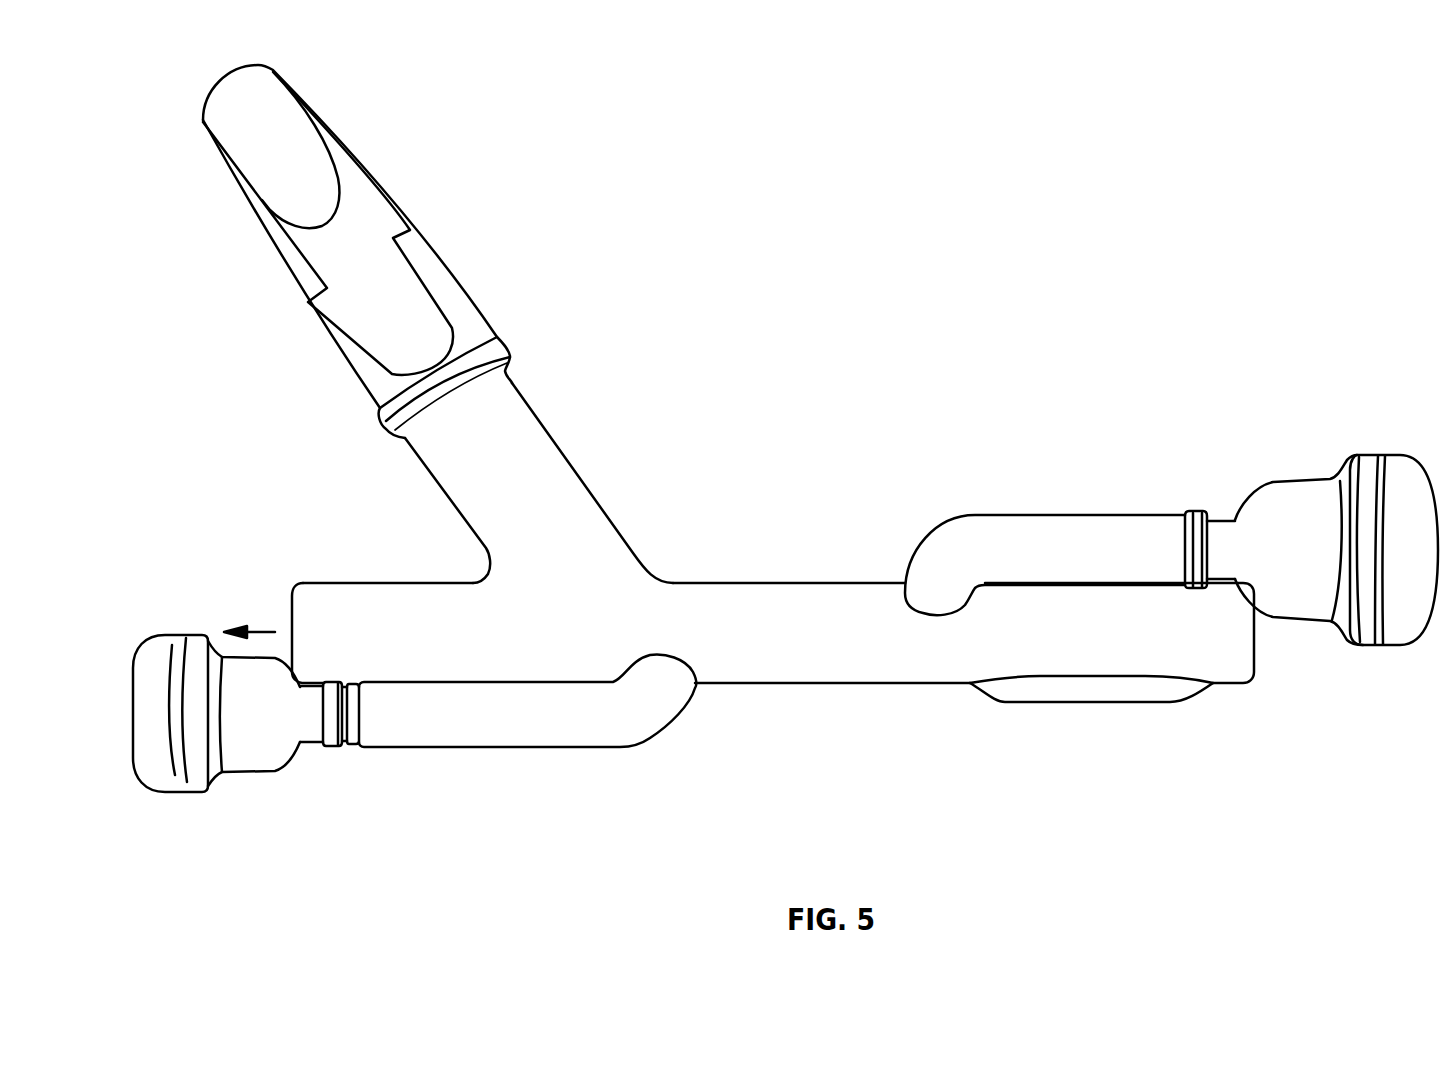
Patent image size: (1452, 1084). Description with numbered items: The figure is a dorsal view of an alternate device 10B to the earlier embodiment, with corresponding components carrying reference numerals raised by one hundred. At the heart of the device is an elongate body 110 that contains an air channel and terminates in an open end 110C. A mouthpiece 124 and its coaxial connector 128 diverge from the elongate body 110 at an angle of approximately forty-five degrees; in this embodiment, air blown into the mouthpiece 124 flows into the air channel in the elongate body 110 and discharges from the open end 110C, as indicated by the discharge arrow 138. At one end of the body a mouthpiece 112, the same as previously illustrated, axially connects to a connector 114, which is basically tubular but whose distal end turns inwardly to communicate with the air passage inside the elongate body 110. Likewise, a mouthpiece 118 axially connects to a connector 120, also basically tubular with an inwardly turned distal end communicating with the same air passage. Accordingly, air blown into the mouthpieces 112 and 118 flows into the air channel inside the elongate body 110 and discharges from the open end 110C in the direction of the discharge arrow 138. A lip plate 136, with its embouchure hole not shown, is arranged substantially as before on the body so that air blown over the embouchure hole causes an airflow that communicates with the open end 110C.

The mouthpiece assembly 10B is at (785, 455).
The elongate body 110 is at (738, 583).
The open end 110C is at (292, 602).
The mouthpiece 112 is at (255, 775).
The connector 114 is at (495, 748).
The mouthpiece 118 is at (1292, 478).
The connector 120 is at (1051, 513).
The mouthpiece 124 is at (373, 177).
The coaxial connector 128 is at (527, 400).
The lip plate 136 is at (1030, 703).
The discharge arrow 138 is at (260, 630).